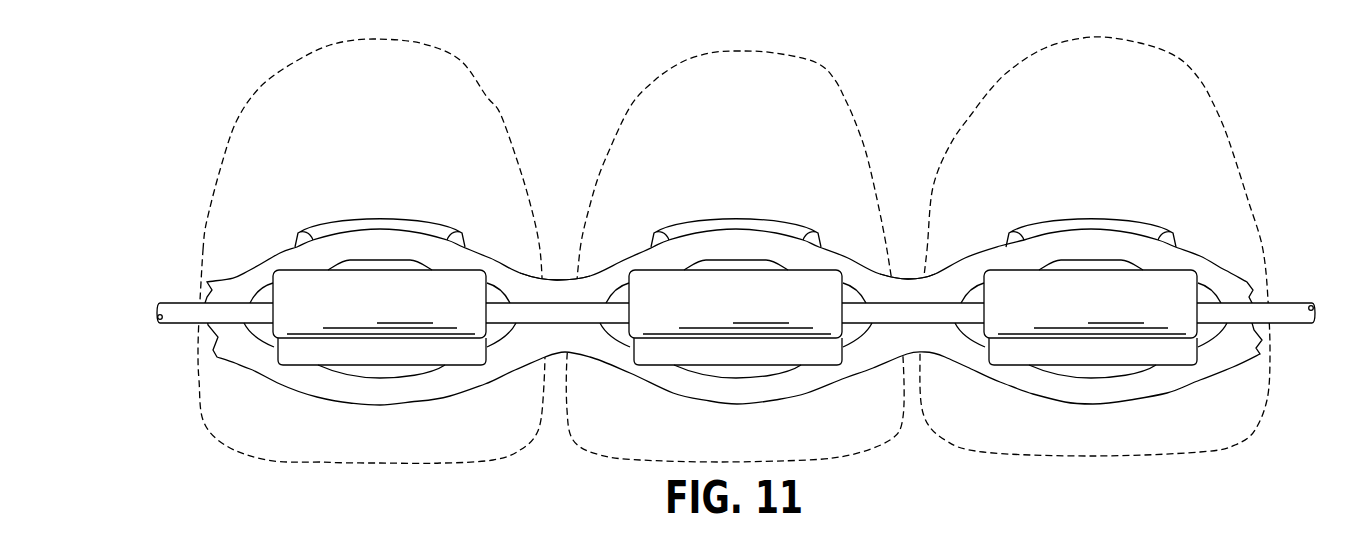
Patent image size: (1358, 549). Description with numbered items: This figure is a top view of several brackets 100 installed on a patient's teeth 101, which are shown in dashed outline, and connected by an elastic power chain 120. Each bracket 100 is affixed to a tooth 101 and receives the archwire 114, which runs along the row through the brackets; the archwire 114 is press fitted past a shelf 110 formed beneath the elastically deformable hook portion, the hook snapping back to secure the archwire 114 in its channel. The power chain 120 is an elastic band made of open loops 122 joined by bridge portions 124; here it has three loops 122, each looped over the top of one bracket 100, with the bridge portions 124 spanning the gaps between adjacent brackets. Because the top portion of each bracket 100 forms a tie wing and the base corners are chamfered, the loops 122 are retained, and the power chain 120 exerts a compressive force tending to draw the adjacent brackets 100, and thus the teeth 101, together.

The bracket 100 is at (735, 317).
The teeth 101 is at (497, 108).
The shelf 110 is at (735, 341).
The archwire 114 is at (1297, 300).
The elastic power chain 120 is at (260, 380).
The open loops 122 is at (735, 214).
The bridge portions 124 is at (558, 290).